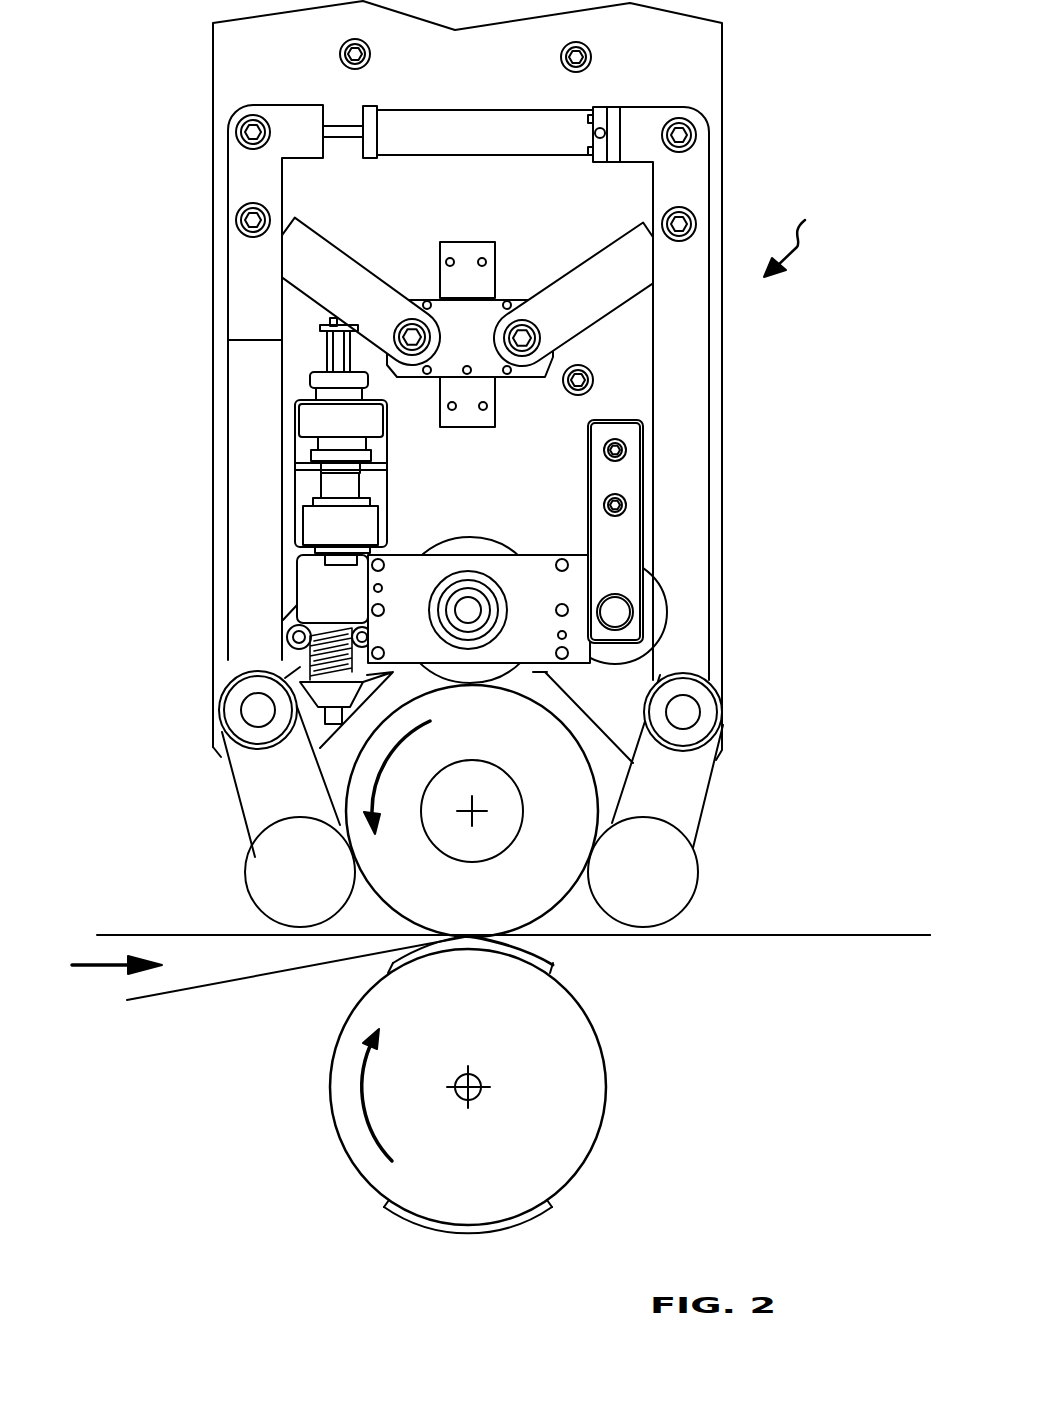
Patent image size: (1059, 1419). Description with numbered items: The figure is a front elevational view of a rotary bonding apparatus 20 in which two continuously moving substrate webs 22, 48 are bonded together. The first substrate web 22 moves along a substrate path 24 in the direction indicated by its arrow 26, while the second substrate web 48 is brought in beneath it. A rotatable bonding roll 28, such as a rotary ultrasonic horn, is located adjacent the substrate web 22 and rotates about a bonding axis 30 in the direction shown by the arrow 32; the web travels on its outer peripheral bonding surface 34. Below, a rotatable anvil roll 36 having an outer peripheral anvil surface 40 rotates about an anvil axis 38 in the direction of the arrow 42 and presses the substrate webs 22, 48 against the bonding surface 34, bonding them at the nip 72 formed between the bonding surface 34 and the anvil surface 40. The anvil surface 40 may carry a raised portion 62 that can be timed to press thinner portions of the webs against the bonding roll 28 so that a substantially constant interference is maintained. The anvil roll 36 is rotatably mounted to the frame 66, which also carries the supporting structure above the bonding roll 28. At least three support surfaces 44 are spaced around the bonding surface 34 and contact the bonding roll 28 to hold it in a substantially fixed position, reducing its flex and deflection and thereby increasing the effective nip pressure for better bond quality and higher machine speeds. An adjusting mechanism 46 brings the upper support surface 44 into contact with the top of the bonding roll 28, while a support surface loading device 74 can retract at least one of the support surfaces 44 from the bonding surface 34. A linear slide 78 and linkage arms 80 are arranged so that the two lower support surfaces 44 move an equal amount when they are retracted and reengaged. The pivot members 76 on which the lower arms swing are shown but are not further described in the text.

The apparatus 20 is at (801, 241).
The substrate web 22 is at (143, 933).
The substrate path 24 is at (808, 935).
The arrow 26 is at (110, 967).
The bonding roll 28 is at (533, 752).
The bonding axis 30 is at (478, 810).
The arrow 32 is at (392, 753).
The outer peripheral bonding surface 34 is at (553, 908).
The anvil roll 36 is at (578, 1130).
The anvil axis 38 is at (472, 1090).
The outer peripheral anvil surface 40 is at (333, 1118).
The arrow 42 is at (378, 1140).
The support surfaces 44 is at (467, 545).
The adjusting mechanism 46 is at (378, 485).
The substrate web 48 is at (293, 993).
The raised portion 62 is at (447, 1232).
The frame 66 is at (699, 63).
The nip 72 is at (545, 947).
The support surface loading device 74 is at (438, 138).
The pivot rollers 76 is at (618, 607).
The linear slide 78 is at (473, 320).
The linkage arms 80 is at (350, 280).